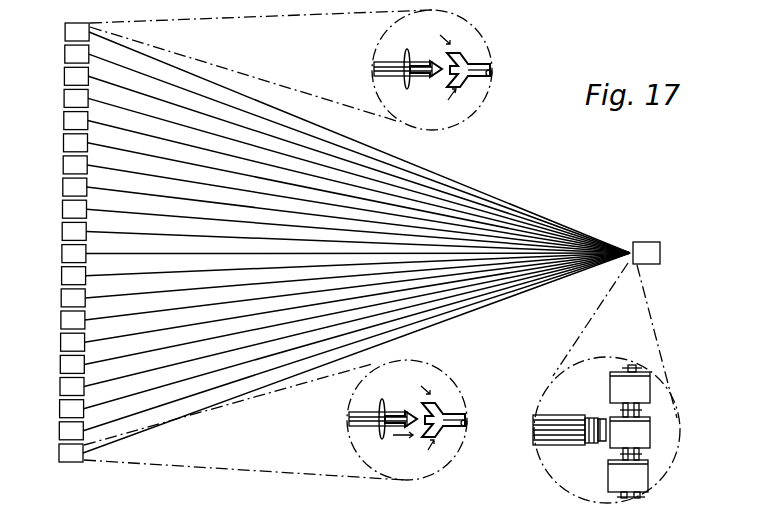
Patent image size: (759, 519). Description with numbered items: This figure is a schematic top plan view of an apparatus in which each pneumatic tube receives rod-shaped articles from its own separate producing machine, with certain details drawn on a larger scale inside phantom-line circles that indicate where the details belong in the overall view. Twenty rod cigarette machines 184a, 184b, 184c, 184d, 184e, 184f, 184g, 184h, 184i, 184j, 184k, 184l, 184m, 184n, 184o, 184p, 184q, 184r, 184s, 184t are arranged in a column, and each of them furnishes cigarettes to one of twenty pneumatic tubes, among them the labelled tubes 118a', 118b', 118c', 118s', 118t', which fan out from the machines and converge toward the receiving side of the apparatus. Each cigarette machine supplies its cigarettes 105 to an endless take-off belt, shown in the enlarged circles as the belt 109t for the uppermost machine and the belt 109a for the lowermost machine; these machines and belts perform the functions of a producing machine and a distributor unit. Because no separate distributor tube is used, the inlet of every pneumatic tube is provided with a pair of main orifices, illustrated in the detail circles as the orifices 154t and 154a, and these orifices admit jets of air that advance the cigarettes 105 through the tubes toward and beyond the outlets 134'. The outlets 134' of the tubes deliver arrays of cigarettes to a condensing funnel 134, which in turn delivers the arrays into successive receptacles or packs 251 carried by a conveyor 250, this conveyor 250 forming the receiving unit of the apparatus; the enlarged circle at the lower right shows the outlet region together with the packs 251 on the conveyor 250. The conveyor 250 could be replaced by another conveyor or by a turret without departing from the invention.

The rod cigarette machine 184a is at (59, 453).
The rod cigarette machine 184b is at (59, 431).
The rod cigarette machine 184c is at (60, 409).
The rod cigarette machine 184d is at (60, 386).
The rod cigarette machine 184e is at (60, 364).
The rod cigarette machine 184f is at (61, 342).
The rod cigarette machine 184g is at (61, 320).
The rod cigarette machine 184h is at (61, 298).
The rod cigarette machine 184i is at (62, 276).
The rod cigarette machine 184j is at (62, 254).
The rod cigarette machine 184k is at (62, 231).
The rod cigarette machine 184l is at (62, 209).
The rod cigarette machine 184m is at (63, 187).
The rod cigarette machine 184n is at (63, 165).
The rod cigarette machine 184o is at (64, 143).
The rod cigarette machine 184p is at (64, 121).
The rod cigarette machine 184q is at (64, 98).
The rod cigarette machine 184r is at (64, 76).
The rod cigarette machine 184s is at (65, 54).
The rod cigarette machine 184t is at (65, 32).
The pneumatic tube 118a' is at (356, 359).
The pneumatic tube 118b' is at (356, 342).
The pneumatic tube 118c' is at (357, 331).
The pneumatic tube 118s' is at (359, 153).
The pneumatic tube 118t' is at (359, 142).
The endless take-off belt 109t is at (382, 62).
The endless take-off belt 109a is at (368, 410).
The main orifice 154t is at (462, 56).
The main orifice 154a is at (445, 404).
The cigarette 105 is at (443, 85).
The receptacle or pack 251 is at (652, 254).
The conveyor 250 is at (632, 366).
The coupling 134 is at (588, 415).
The outlet 134' is at (565, 467).